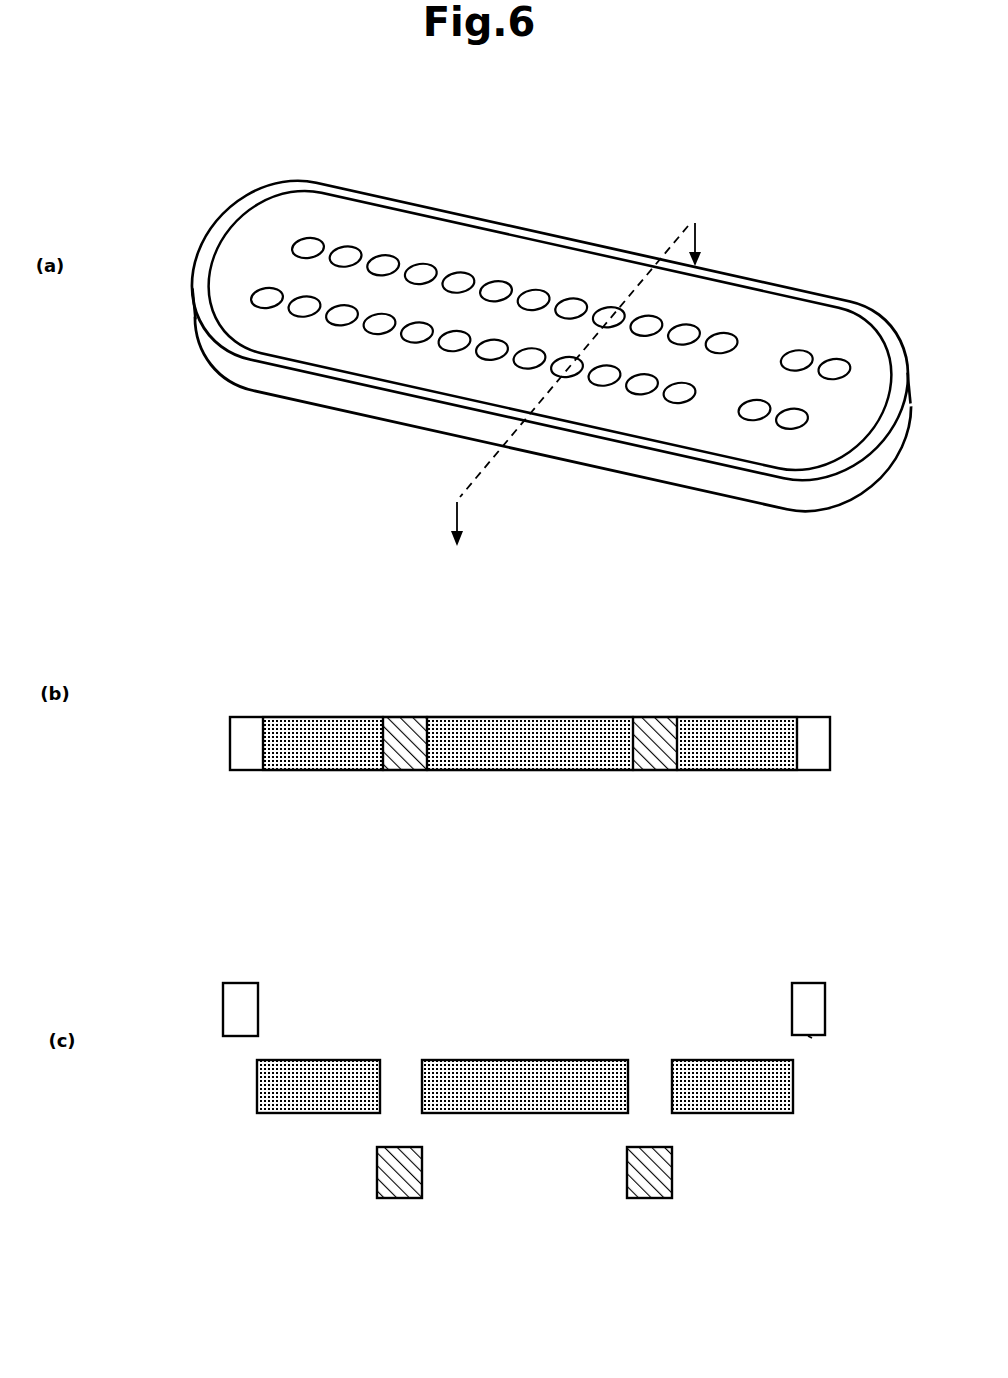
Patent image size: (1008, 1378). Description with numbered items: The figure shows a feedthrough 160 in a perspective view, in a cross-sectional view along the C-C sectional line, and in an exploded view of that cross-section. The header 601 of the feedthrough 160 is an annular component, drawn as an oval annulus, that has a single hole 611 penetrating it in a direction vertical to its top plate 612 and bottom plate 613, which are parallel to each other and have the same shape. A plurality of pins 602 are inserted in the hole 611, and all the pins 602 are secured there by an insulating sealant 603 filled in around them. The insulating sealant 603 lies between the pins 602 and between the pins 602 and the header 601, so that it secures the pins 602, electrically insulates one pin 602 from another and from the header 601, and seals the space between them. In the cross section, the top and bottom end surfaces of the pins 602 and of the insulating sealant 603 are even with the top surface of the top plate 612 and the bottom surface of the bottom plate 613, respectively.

The feedthrough 160 is at (637, 111).
The header 601 is at (252, 222).
The pins 602 is at (420, 276).
The insulating sealant 603 is at (578, 272).
The hole 611 is at (790, 1012).
The top plate 612 is at (250, 981).
The bottom plate 613 is at (808, 1036).